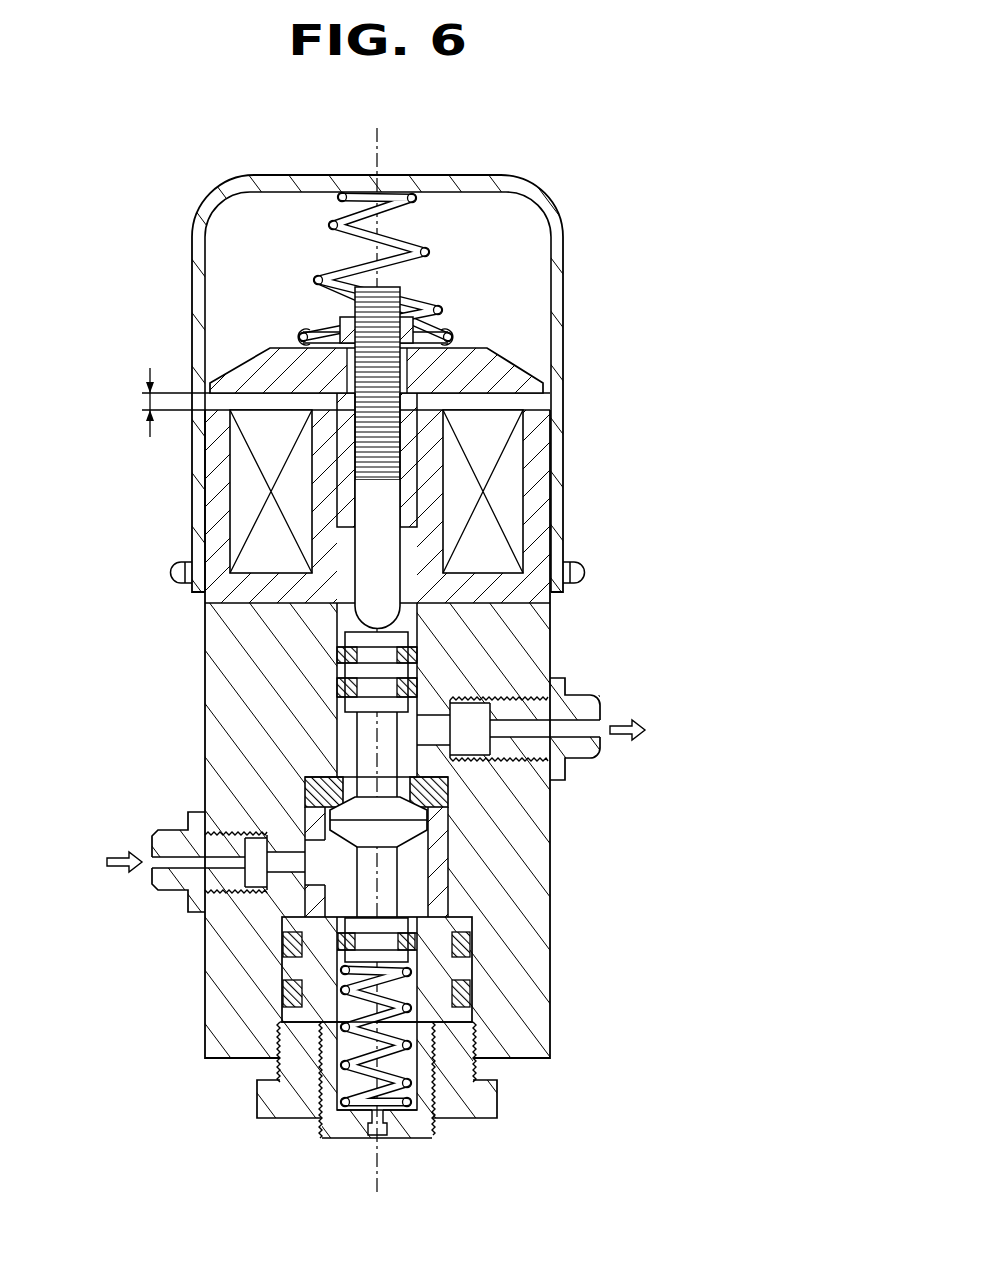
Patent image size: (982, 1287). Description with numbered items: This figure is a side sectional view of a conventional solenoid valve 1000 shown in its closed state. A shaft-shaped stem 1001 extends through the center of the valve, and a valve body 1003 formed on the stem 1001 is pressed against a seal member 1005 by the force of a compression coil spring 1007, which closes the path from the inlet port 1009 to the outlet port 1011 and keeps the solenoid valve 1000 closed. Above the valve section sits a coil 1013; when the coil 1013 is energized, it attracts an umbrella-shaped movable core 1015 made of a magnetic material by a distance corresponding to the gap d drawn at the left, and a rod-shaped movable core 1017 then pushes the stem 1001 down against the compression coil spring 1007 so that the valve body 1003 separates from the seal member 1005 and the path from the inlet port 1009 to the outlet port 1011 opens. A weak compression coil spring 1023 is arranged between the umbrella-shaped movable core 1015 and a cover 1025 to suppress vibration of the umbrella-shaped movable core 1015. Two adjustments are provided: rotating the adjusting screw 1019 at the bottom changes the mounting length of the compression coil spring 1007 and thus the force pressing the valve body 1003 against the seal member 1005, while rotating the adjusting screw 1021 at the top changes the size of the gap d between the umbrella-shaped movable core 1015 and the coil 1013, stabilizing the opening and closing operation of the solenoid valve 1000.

The solenoid valve 1000 is at (575, 126).
The cover 1025 is at (573, 242).
The compression coil spring 1023 is at (445, 250).
The umbrella-shaped movable core 1015 is at (495, 363).
The adjusting screw 1021 is at (418, 433).
The coil 1013 is at (532, 492).
The rod-shaped movable core 1017 is at (408, 550).
The outlet port 1011 is at (580, 708).
The inlet port 1009 is at (177, 884).
The seal member 1005 is at (432, 792).
The valve body 1003 is at (420, 820).
The stem 1001 is at (410, 873).
The compression coil spring 1007 is at (425, 1083).
The adjusting screw 1019 is at (408, 1148).